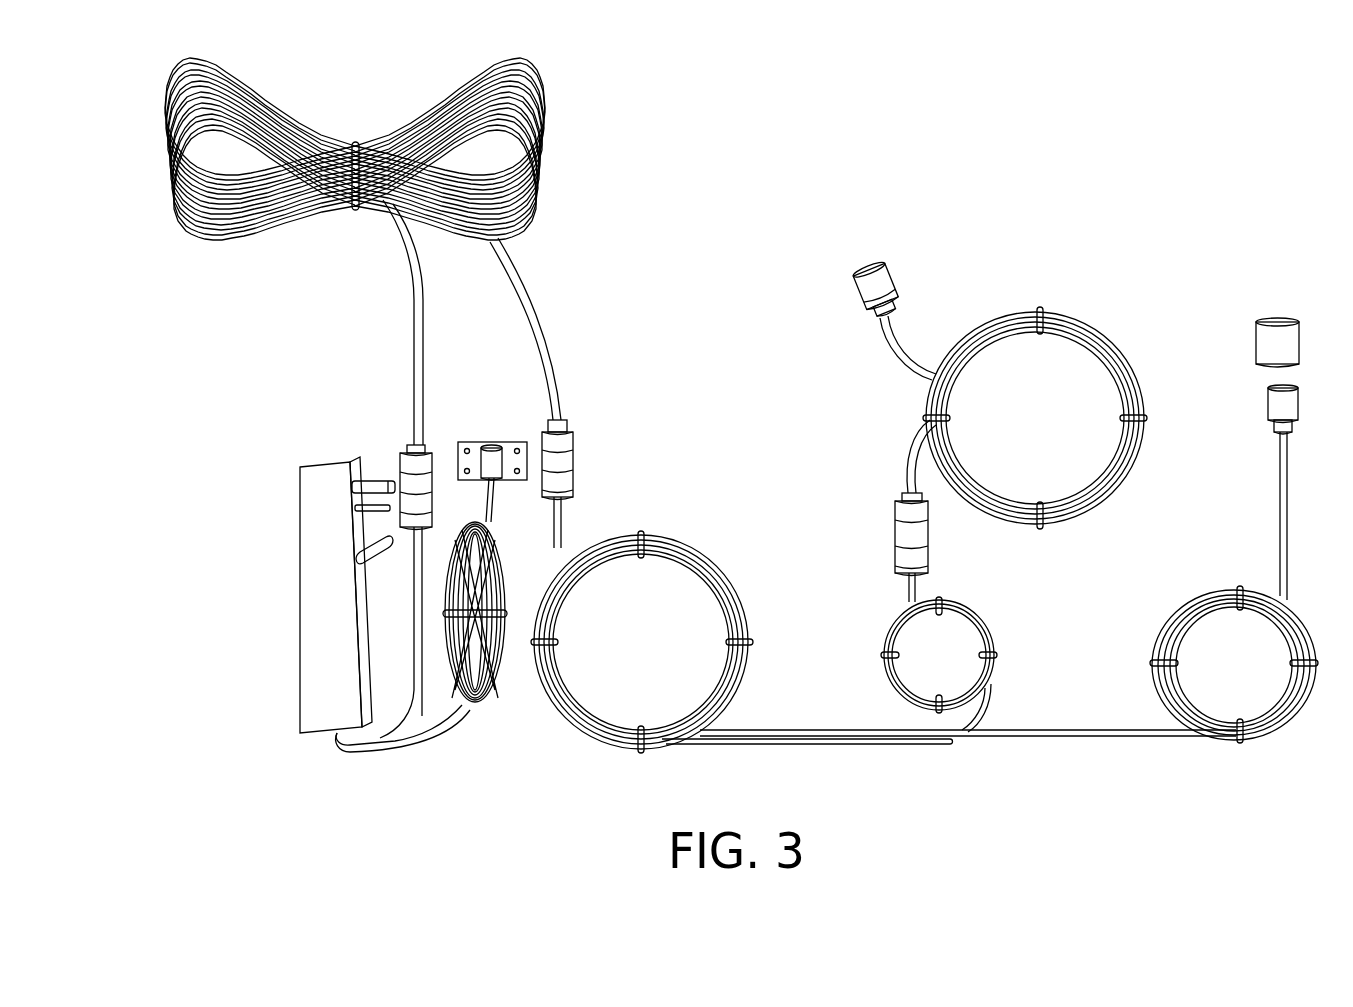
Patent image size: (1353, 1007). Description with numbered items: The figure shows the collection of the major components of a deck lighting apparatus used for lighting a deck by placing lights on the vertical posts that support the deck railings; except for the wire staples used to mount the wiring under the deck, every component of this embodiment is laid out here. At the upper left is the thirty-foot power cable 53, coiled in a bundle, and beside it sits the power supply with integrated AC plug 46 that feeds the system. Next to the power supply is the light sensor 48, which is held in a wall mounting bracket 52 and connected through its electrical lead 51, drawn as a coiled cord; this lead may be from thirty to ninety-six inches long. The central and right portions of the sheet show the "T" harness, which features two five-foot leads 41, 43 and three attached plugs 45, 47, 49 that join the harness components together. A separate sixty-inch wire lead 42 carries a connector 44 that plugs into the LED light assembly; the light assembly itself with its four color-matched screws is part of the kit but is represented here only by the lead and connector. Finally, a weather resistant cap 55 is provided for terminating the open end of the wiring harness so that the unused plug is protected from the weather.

The 5-foot lead 41 is at (618, 653).
The 60-inch wire lead 42 is at (1021, 428).
The 5-foot lead 43 is at (1219, 672).
The connector 44 is at (880, 270).
The plug 45 is at (575, 475).
The power supply with integrated AC plug 46 is at (318, 462).
The plug 47 is at (898, 562).
The light sensor 48 is at (490, 443).
The plug 49 is at (1271, 406).
The electrical lead 51 is at (498, 545).
The wall mounting bracket 52 is at (474, 443).
The power cable 53 is at (300, 113).
The weather resistant cap 55 is at (1270, 340).